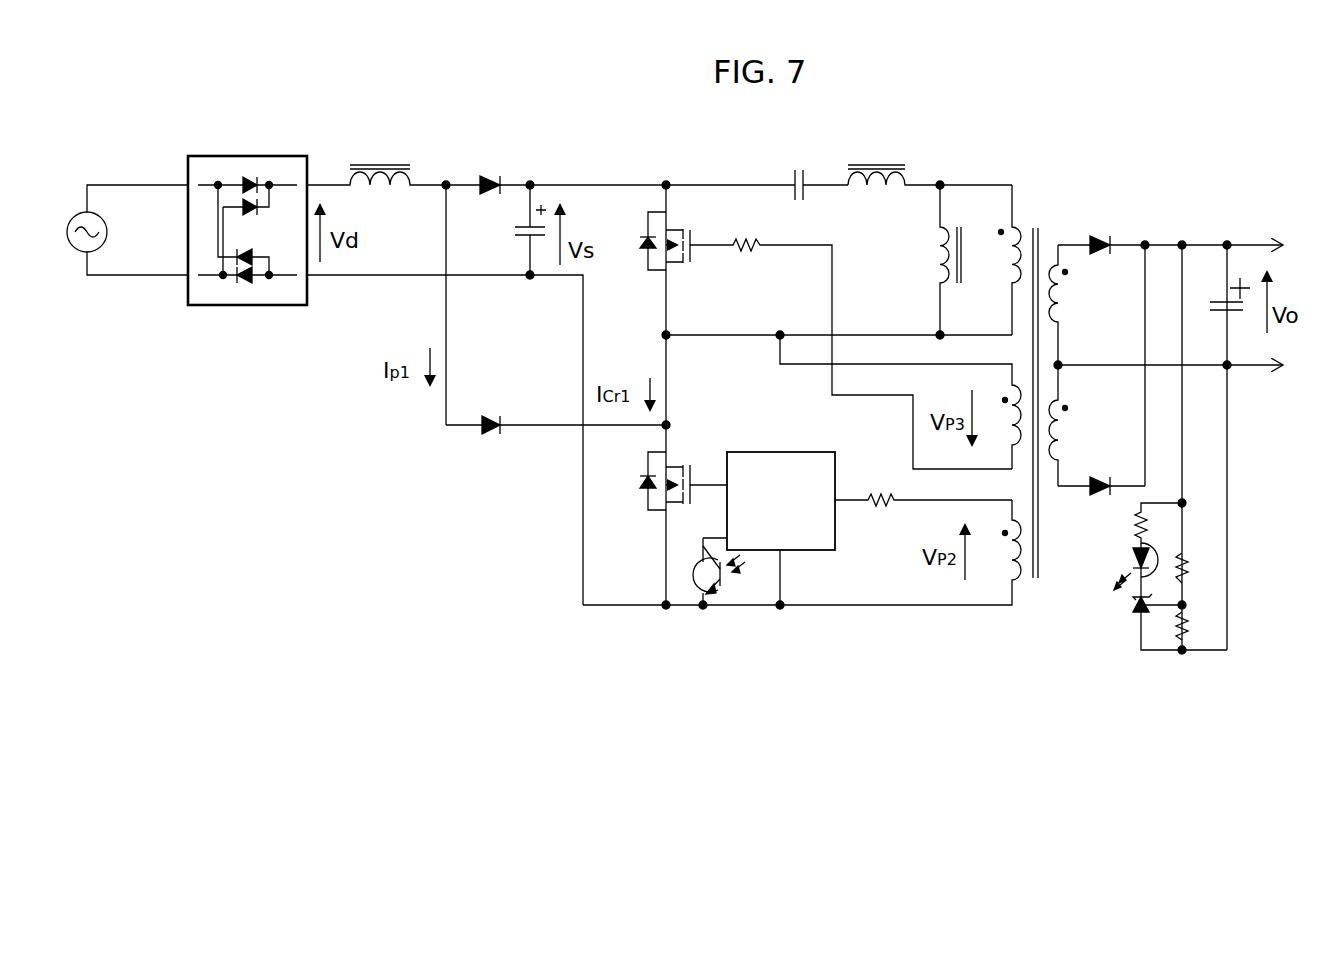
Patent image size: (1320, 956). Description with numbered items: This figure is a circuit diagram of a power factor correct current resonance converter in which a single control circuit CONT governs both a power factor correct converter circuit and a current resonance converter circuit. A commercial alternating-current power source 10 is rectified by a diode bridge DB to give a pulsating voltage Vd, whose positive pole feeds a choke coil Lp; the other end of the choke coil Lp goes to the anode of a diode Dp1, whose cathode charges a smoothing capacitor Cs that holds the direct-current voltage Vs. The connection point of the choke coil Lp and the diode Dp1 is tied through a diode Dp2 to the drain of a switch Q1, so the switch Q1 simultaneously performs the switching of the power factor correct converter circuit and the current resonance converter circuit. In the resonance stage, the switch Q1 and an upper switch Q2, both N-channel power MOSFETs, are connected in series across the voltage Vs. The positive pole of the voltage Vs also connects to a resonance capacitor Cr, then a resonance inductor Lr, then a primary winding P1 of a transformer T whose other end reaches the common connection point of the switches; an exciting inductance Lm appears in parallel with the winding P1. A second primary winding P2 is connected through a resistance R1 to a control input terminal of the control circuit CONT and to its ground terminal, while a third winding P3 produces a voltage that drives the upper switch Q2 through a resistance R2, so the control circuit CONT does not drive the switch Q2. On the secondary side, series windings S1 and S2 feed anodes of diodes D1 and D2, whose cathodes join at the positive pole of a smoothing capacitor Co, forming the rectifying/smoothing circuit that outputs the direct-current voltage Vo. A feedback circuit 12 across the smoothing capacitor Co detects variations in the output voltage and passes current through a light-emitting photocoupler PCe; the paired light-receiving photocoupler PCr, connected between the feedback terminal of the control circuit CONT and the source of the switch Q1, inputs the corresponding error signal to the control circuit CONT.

The commercial alternating-current power source 10 is at (85, 214).
The feedback circuit 12 is at (1181, 576).
The diode bridge DB is at (247, 213).
The choke coil Lp is at (376, 158).
The diode Dp1 is at (488, 168).
The diode Dp2 is at (556, 408).
The smoothing capacitor Cs is at (516, 230).
The switch Q2 is at (674, 234).
The switch Q1 is at (673, 472).
The resistance R2 is at (851, 340).
The resistance R1 is at (923, 488).
The resonance capacitor Cr is at (757, 171).
The resonance inductor Lr is at (894, 161).
The exciting inductance Lm is at (934, 260).
The transformer T is at (1033, 388).
The winding P1 is at (1000, 260).
The second winding P2 is at (802, 552).
The third winding P3 is at (900, 402).
The winding S1 is at (1072, 305).
The winding S2 is at (1072, 425).
The diode D1 is at (1101, 230).
The diode D2 is at (1101, 472).
The smoothing capacitor Co is at (1217, 307).
The control circuit CONT is at (762, 528).
The photocoupler on light-receiving side PCr is at (719, 592).
The photocoupler on light-emitting side PCe is at (1114, 565).